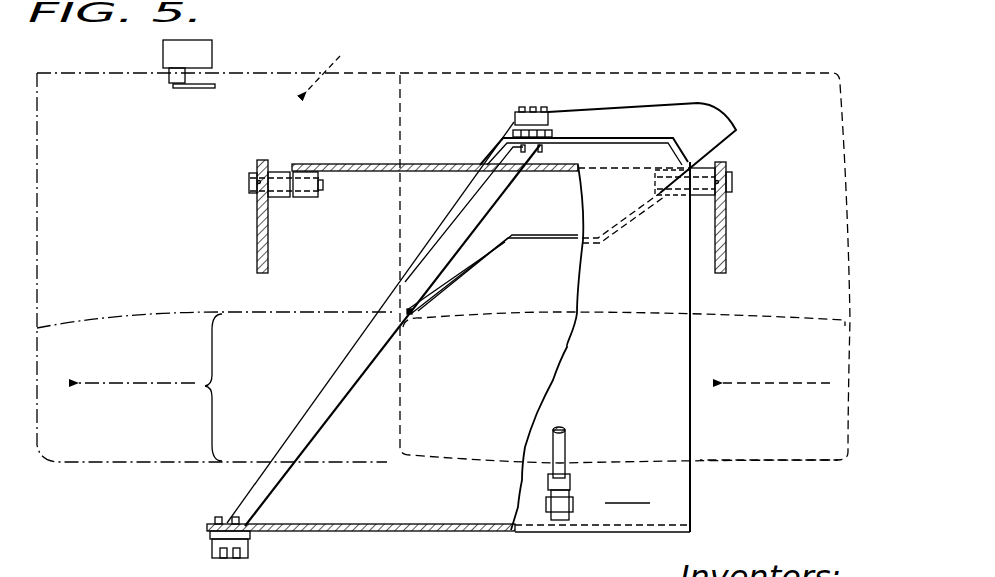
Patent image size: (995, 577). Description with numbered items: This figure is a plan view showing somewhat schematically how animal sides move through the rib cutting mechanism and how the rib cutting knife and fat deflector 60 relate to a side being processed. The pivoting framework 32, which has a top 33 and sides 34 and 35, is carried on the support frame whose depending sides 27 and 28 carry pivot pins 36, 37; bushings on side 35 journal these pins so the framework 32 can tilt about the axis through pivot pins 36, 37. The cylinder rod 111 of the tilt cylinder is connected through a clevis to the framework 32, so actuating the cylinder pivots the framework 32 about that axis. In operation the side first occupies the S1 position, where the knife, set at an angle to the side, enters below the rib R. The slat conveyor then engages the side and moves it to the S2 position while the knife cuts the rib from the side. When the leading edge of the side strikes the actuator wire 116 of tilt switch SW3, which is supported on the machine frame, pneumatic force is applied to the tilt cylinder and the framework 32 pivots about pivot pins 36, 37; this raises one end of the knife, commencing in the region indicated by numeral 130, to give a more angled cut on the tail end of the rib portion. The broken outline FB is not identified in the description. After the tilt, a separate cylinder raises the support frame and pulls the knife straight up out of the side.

The tilt switch SW3 is at (201, 44).
The actuator wire 116 is at (205, 89).
The second side position S2 is at (341, 61).
The feed box outline FB is at (775, 123).
The rib R is at (207, 388).
The first side position S1 is at (440, 458).
The side of framework 35 is at (365, 132).
The pivot pin 36 is at (250, 180).
The pivot pin 37 is at (730, 178).
The side of support frame 27 is at (257, 232).
The side of support frame 28 is at (726, 240).
The tilt commencement region 130 is at (275, 456).
The fat deflector 60 is at (613, 128).
The cylinder rod 111 is at (566, 447).
The top of framework 33 is at (627, 492).
The framework 32 is at (698, 491).
The side of framework 34 is at (331, 533).